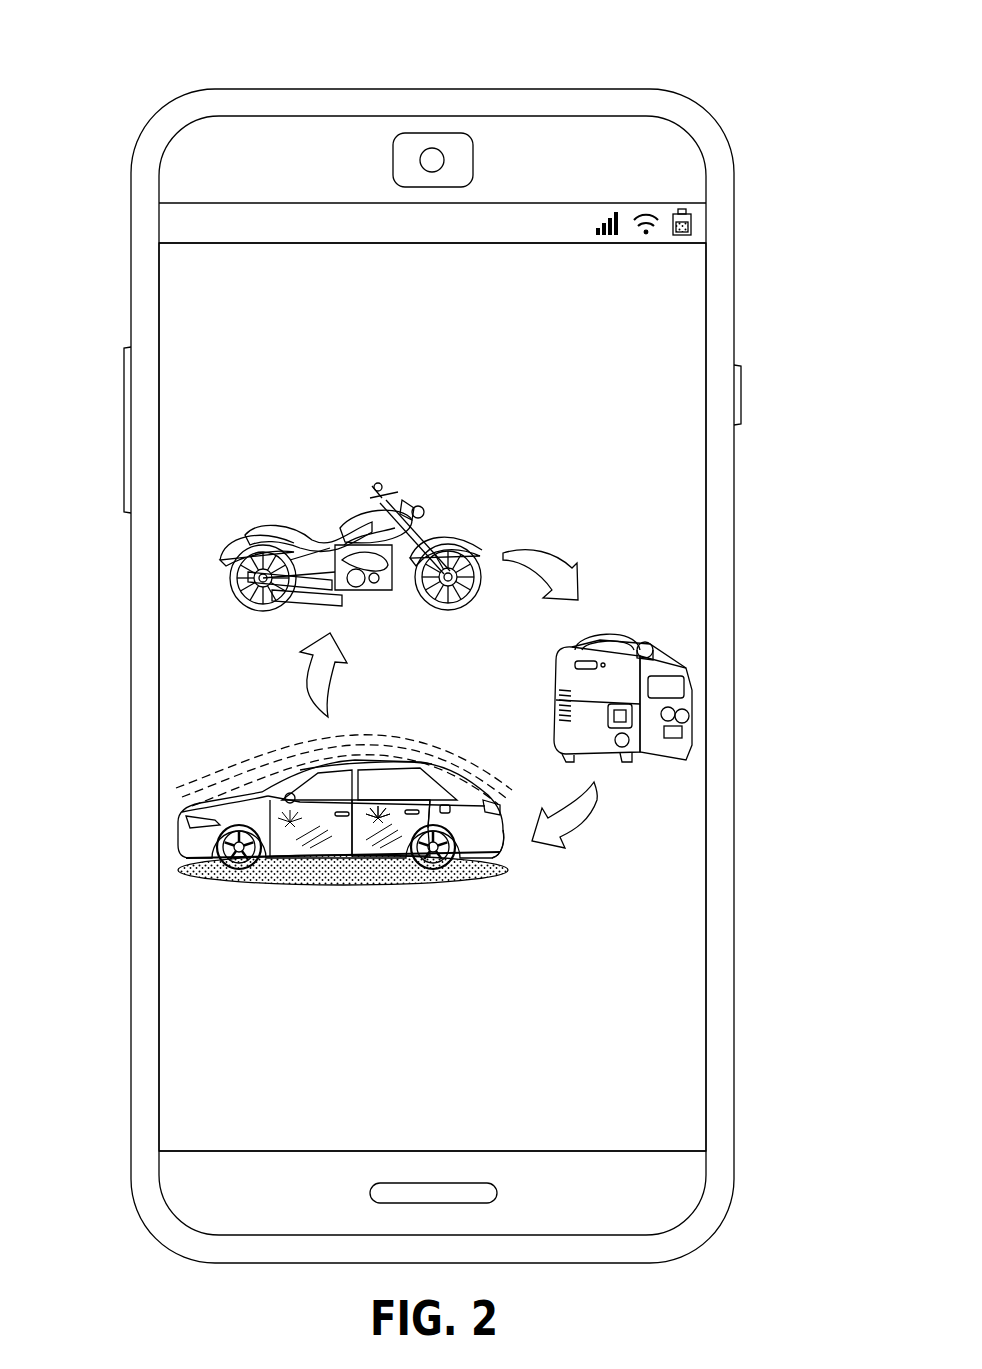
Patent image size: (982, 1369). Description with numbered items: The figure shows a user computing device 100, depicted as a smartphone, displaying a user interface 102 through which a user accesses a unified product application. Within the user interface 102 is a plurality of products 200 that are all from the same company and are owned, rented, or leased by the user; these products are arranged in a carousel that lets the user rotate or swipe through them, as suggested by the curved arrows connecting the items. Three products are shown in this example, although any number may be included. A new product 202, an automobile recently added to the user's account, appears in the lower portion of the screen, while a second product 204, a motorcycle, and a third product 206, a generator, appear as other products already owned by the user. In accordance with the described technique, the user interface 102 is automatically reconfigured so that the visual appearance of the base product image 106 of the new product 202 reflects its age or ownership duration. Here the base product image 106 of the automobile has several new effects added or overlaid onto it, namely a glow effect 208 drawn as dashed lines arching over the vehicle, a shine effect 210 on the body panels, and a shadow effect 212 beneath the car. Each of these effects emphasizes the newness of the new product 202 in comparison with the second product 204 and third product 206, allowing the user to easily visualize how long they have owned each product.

The user computing device 100 is at (287, 89).
The user interface 102 is at (208, 315).
The base product image 106 is at (393, 878).
The plurality of products 200 is at (634, 529).
The new product 202 is at (346, 910).
The second product 204 is at (324, 497).
The third product 206 is at (652, 628).
The glow effect 208 is at (390, 737).
The shine effect 210 is at (385, 842).
The shadow effect 212 is at (298, 870).